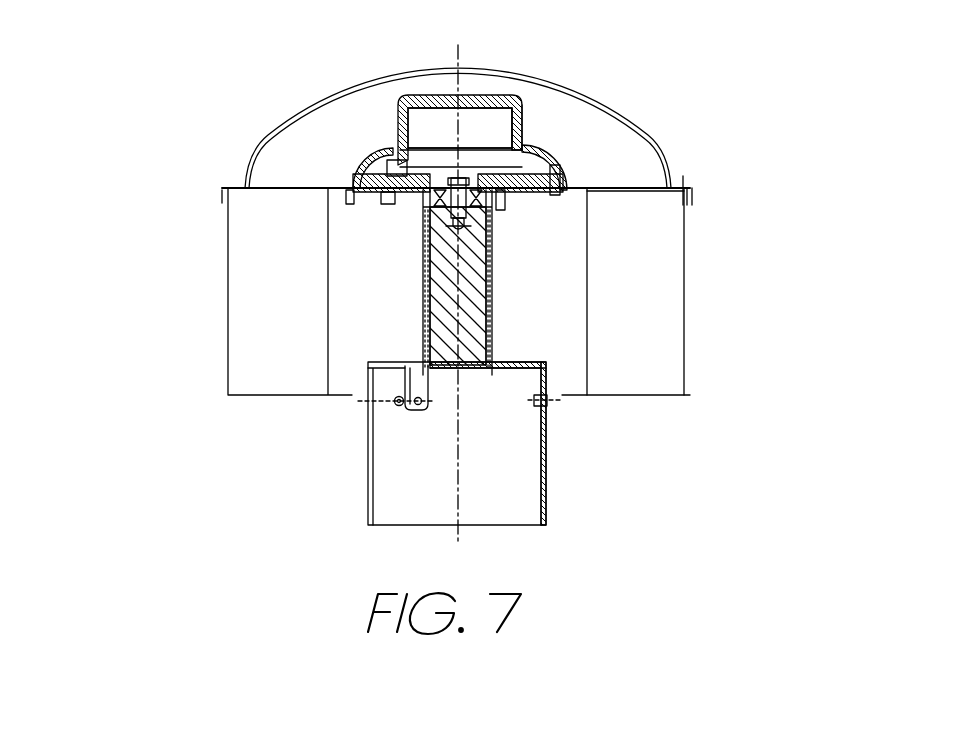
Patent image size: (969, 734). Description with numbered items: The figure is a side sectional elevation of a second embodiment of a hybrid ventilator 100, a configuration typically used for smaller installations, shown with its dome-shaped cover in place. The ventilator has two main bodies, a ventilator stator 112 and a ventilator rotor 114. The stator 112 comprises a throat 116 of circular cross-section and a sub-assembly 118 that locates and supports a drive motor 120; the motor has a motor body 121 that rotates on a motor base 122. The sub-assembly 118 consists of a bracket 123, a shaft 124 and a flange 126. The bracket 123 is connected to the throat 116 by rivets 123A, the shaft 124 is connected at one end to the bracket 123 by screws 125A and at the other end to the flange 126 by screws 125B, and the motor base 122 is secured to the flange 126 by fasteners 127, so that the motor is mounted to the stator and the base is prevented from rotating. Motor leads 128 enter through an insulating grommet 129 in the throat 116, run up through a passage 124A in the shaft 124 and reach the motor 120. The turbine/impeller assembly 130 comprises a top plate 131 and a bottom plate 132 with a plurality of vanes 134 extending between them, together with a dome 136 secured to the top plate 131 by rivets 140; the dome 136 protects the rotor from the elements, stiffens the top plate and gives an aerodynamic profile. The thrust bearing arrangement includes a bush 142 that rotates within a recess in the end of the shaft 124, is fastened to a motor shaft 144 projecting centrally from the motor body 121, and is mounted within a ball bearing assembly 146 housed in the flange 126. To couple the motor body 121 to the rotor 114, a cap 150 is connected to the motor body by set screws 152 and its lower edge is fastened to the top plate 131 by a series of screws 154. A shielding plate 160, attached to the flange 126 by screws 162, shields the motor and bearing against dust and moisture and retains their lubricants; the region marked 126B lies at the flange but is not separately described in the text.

The hybrid ventilator 100 is at (756, 101).
The ventilator stator 112 is at (190, 488).
The ventilator rotor 114 is at (148, 277).
The throat 116 is at (545, 472).
The sub-assembly 118 is at (478, 392).
The drive motor 120 is at (428, 102).
The motor body 121 is at (484, 122).
The motor base 122 is at (395, 166).
The bracket 123 is at (420, 384).
The rivets 123A is at (552, 406).
The shaft 124 is at (445, 300).
The passage 124A is at (427, 322).
The screws 125A is at (488, 348).
The screws 125B is at (493, 208).
The flange 126 is at (556, 180).
The bearing 126B is at (426, 196).
The fasteners 127 is at (360, 163).
The motor leads 128 is at (388, 406).
The insulating grommet 129 is at (398, 414).
The turbine/impeller assembly 130 is at (706, 292).
The top plate 131 is at (628, 197).
The bottom plate 132 is at (646, 399).
The vanes 134 is at (645, 322).
The dome 136 is at (553, 80).
The rivets 140 is at (690, 181).
The bush 142 is at (462, 228).
The motor shaft 144 is at (455, 206).
The ball bearing assembly 146 is at (473, 208).
The cap 150 is at (528, 176).
The set screws 152 is at (519, 126).
The screws 154 is at (350, 198).
The shielding plate 160 is at (373, 200).
The screws 162 is at (504, 197).